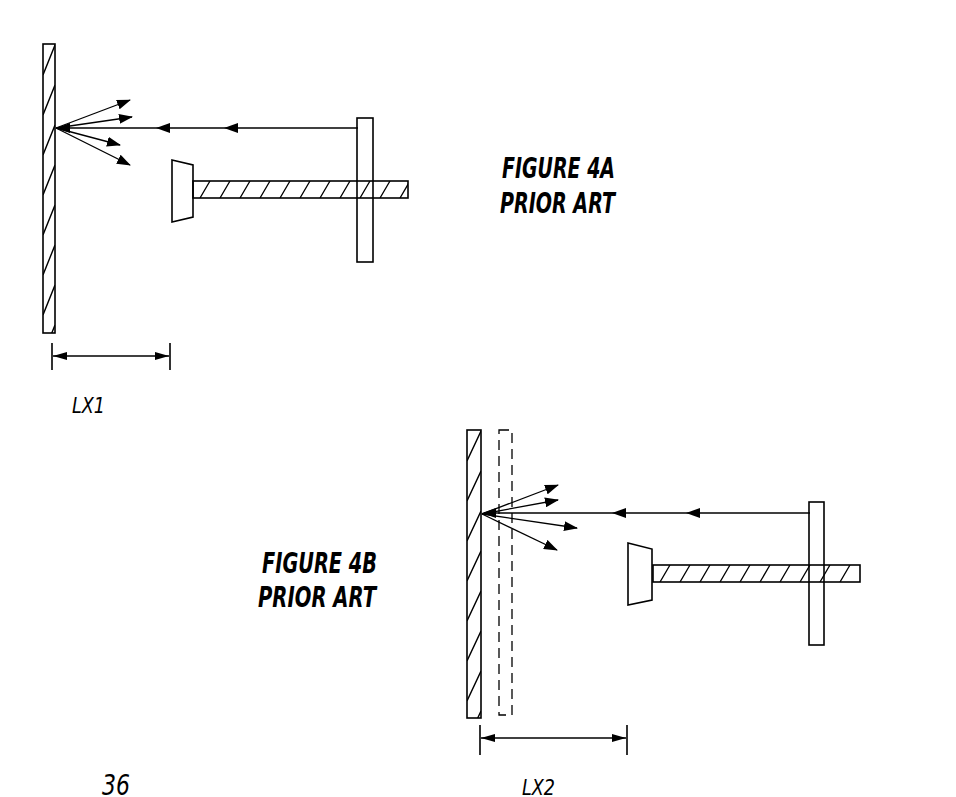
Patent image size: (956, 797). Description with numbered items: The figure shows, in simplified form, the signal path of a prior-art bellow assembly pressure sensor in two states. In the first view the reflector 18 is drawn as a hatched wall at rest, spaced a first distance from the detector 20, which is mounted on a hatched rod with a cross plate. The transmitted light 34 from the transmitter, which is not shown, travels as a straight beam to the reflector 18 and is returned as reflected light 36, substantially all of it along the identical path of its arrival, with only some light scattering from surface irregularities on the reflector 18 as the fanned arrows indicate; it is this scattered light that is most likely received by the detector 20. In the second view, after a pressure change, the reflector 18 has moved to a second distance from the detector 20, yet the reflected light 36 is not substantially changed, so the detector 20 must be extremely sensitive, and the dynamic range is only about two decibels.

In FIG. 4A, the reflector 18 is at (56, 275).
In FIG. 4B, the reflector 18 is at (482, 660).
In FIG. 4A, the detector 20 is at (192, 218).
In FIG. 4B, the detector 20 is at (640, 603).
In FIG. 4A, the transmitted light 34 is at (188, 128).
In FIG. 4B, the transmitted light 34 is at (644, 513).
In FIG. 4A, the reflected light 36 is at (104, 100).
In FIG. 4B, the reflected light 36 is at (530, 490).